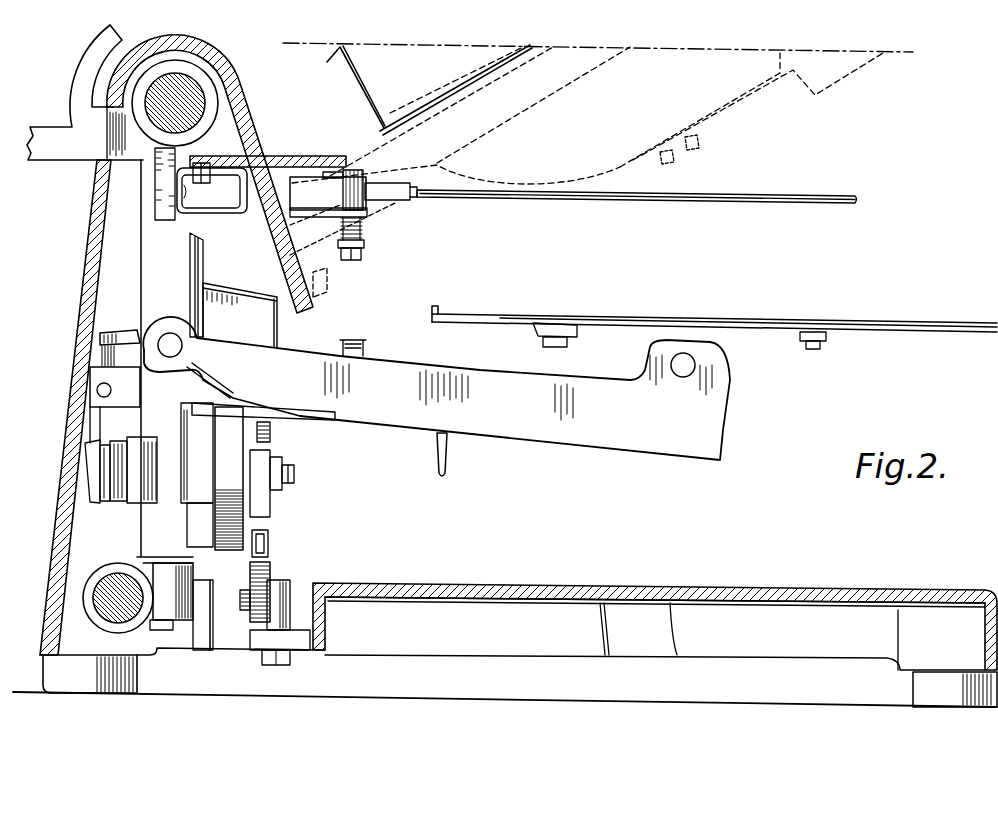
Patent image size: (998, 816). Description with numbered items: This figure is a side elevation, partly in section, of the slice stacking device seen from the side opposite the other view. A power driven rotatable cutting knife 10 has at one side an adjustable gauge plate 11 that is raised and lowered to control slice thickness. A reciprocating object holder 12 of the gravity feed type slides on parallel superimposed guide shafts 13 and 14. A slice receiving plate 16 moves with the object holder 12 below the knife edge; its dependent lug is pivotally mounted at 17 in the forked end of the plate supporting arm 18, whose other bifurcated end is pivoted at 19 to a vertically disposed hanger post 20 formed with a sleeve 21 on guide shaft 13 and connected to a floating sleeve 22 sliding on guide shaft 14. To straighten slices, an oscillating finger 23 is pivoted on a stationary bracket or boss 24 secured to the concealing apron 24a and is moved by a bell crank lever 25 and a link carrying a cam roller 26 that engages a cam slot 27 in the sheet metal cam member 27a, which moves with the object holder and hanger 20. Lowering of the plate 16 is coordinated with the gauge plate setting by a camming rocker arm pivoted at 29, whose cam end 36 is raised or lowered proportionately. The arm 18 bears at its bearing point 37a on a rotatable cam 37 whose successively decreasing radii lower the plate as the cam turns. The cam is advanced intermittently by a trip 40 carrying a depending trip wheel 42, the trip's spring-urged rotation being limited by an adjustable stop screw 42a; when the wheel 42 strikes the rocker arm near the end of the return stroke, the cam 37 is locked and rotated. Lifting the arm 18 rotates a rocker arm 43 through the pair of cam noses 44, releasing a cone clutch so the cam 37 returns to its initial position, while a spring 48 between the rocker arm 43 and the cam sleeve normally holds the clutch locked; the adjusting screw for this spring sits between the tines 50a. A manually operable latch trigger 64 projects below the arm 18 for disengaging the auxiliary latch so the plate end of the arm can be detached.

The rotatable cutting knife 10 is at (330, 160).
The adjustable gauge plate 11 is at (362, 84).
The reciprocating object holder 12 is at (430, 57).
The guide shaft 13 is at (203, 97).
The guide shaft 14 is at (110, 613).
The slice receiving plate 16 is at (933, 322).
The pivot point of slice receiving plate 17 is at (696, 364).
The plate supporting arm 18 is at (722, 432).
The pivot point of arm 19 is at (171, 340).
The hanger post 20 is at (203, 276).
The sleeve 21 is at (193, 63).
The floating sleeve 22 is at (110, 563).
The oscillating finger 23 is at (750, 200).
The stationary bracket or boss 24 is at (317, 215).
The concealing apron 24a is at (250, 152).
The bell crank lever 25 is at (383, 160).
The cam roller 26 is at (204, 163).
The cam slot 27 is at (214, 182).
The sheet metal cam member 27a is at (197, 210).
The pivot of camming rocker arm 29 is at (240, 600).
The cam end of rocker arm 36 is at (272, 572).
The rotatable cam 37 is at (240, 508).
The bearing point 37a is at (231, 398).
The trip 40 is at (265, 502).
The trip wheel 42 is at (266, 543).
The adjustable stop screw 42a is at (271, 433).
The rocker arm 43 is at (110, 360).
The cam noses 44 is at (147, 328).
The spring 48 is at (117, 500).
The tines 50a is at (85, 487).
The latch trigger 64 is at (445, 460).